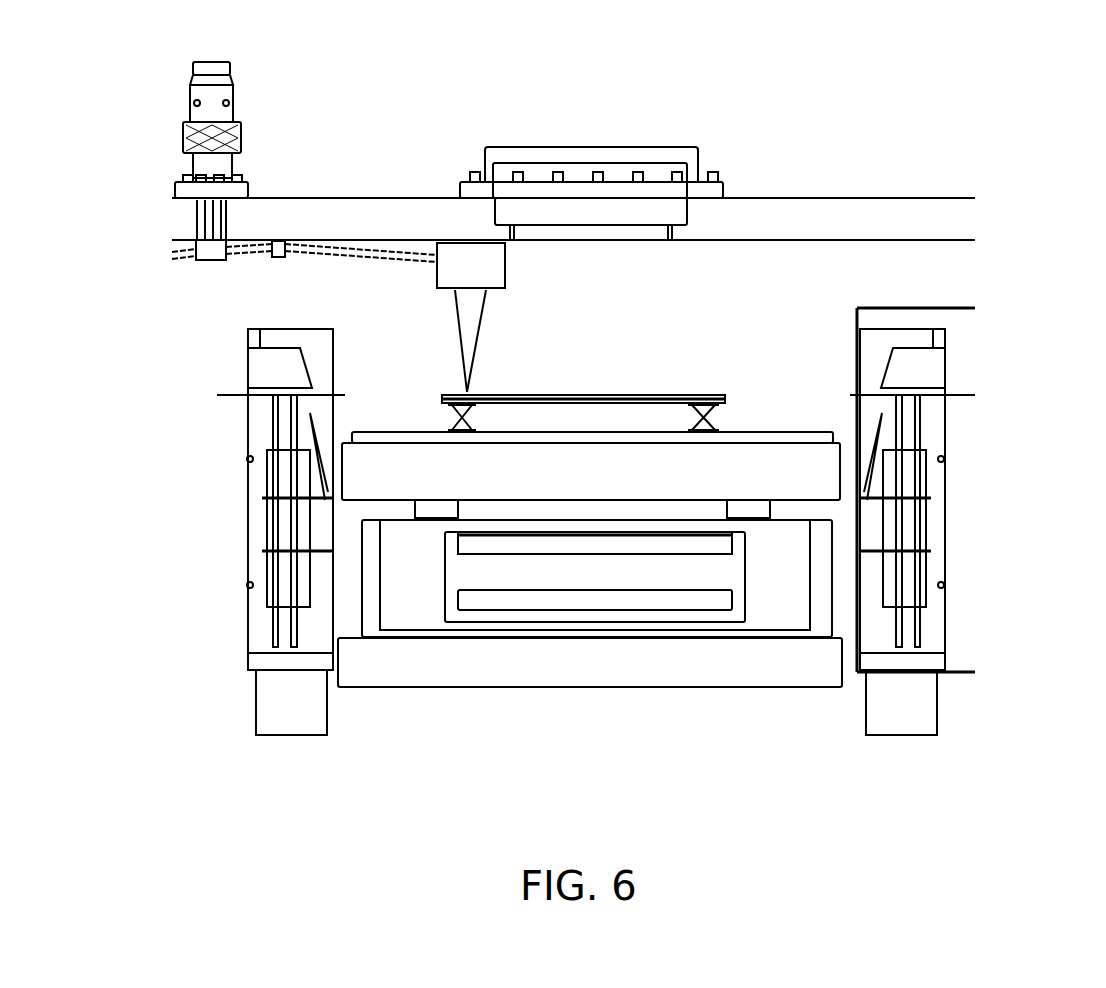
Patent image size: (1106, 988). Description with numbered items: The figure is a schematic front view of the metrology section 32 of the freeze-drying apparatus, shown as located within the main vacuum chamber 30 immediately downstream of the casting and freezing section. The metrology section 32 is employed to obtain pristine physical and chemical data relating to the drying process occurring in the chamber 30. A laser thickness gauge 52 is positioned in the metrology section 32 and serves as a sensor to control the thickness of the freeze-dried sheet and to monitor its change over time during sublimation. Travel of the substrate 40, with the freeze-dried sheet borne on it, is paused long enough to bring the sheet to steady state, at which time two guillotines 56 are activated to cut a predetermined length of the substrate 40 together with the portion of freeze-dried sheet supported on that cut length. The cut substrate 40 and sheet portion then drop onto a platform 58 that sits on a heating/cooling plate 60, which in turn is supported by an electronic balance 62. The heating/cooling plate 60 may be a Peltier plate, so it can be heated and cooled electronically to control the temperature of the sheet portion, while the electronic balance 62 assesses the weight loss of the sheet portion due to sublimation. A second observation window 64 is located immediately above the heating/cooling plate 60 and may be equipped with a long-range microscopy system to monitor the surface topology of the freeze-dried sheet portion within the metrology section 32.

The main vacuum chamber 30 is at (620, 289).
The metrology section 32 is at (778, 270).
The substrate 40 is at (232, 393).
The laser thickness gauge 52 is at (463, 260).
The guillotine 56 is at (262, 519).
The platform 58 is at (549, 397).
The heating/cooling plate 60 is at (622, 440).
The electronic balance 62 is at (595, 578).
The second observation window 64 is at (622, 193).